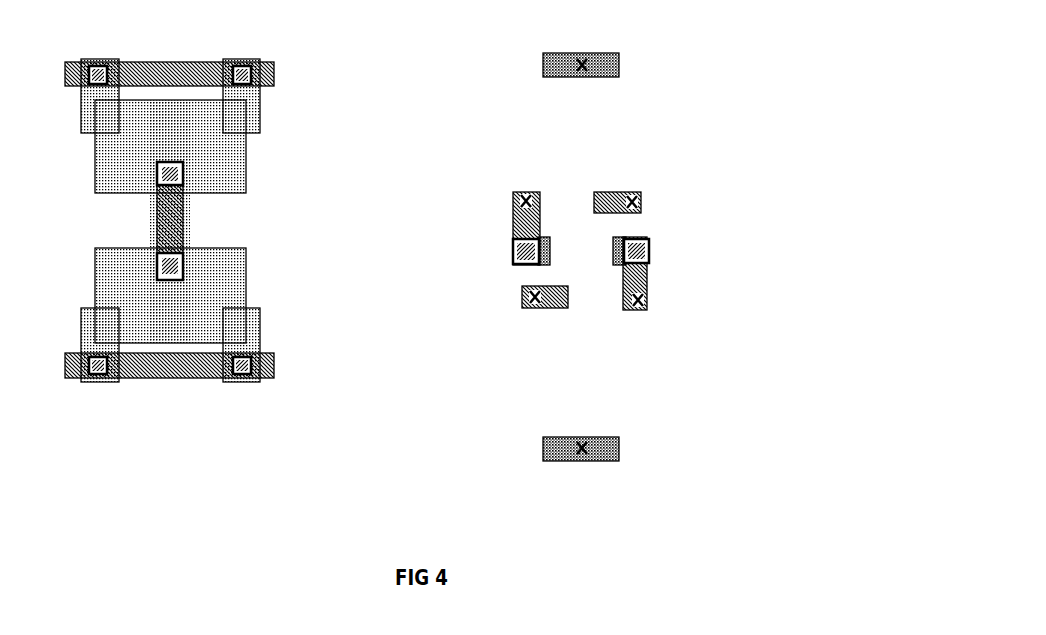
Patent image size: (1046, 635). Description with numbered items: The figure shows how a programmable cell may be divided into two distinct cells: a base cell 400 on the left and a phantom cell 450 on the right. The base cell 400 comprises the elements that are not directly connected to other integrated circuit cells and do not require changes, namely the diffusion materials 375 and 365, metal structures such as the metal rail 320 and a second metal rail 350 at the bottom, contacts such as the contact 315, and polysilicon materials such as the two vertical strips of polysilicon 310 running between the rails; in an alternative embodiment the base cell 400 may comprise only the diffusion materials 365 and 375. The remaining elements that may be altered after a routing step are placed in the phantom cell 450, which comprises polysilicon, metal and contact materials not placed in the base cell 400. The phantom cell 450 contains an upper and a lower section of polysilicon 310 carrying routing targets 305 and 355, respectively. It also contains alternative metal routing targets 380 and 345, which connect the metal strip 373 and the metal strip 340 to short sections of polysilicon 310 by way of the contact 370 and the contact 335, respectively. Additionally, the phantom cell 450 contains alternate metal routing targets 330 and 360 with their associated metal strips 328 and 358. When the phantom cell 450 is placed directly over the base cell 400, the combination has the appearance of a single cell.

The routing target 305 is at (587, 56).
The polysilicon 310 is at (200, 47).
The contact 315 is at (245, 65).
The metal rail 320 is at (274, 70).
The metal strip 328 is at (623, 193).
The alternate metal routing target 330 is at (638, 198).
The contact 335 is at (640, 250).
The metal strip 340 is at (647, 275).
The alternative metal routing target 345 is at (647, 297).
The bottom metal power rail 350 is at (274, 353).
The routing target 355 is at (583, 447).
The metal strip 358 is at (553, 308).
The alternate metal routing target 360 is at (522, 297).
The diffusion material 365 is at (185, 325).
The contact 370 is at (520, 250).
The metal strip 373 is at (516, 213).
The diffusion material 375 is at (185, 137).
The alternative metal routing target 380 is at (516, 193).
The base cell 400 is at (180, 427).
The phantom cell 450 is at (703, 430).